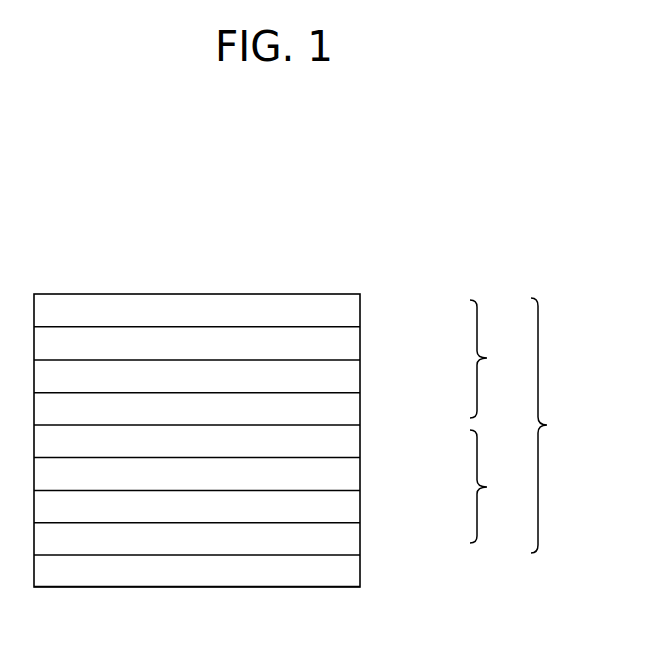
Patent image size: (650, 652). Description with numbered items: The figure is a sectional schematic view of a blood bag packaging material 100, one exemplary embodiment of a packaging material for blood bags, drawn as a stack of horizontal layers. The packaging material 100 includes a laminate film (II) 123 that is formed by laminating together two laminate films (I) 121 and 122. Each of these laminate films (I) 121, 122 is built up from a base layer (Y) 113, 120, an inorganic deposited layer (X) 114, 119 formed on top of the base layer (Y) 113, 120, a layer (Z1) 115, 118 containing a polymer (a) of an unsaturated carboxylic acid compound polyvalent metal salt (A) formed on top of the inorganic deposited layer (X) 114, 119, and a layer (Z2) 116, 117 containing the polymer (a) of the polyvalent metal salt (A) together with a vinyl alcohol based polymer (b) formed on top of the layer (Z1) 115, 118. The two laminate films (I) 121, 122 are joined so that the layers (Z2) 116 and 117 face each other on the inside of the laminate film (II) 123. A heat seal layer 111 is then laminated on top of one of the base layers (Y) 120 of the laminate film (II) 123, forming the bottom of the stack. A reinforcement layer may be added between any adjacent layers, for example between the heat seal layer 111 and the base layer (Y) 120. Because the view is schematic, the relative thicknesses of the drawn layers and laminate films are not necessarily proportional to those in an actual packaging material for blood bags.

The blood bag packaging material 100 is at (196, 278).
The heat seal layer 111 is at (343, 571).
The base layer (Y) 113 is at (343, 310).
The inorganic deposited layer (X) 114 is at (343, 342).
The layer (Z1) 115 is at (343, 376).
The layer (Z2) 116 is at (343, 408).
The layer (Z2) 117 is at (343, 441).
The layer (Z1) 118 is at (343, 473).
The inorganic deposited layer (X) 119 is at (343, 506).
The base layer (Y) 120 is at (343, 538).
The laminate film (I) 121 is at (500, 359).
The laminate film (I) 122 is at (500, 486).
The laminate film (II) 123 is at (560, 425).